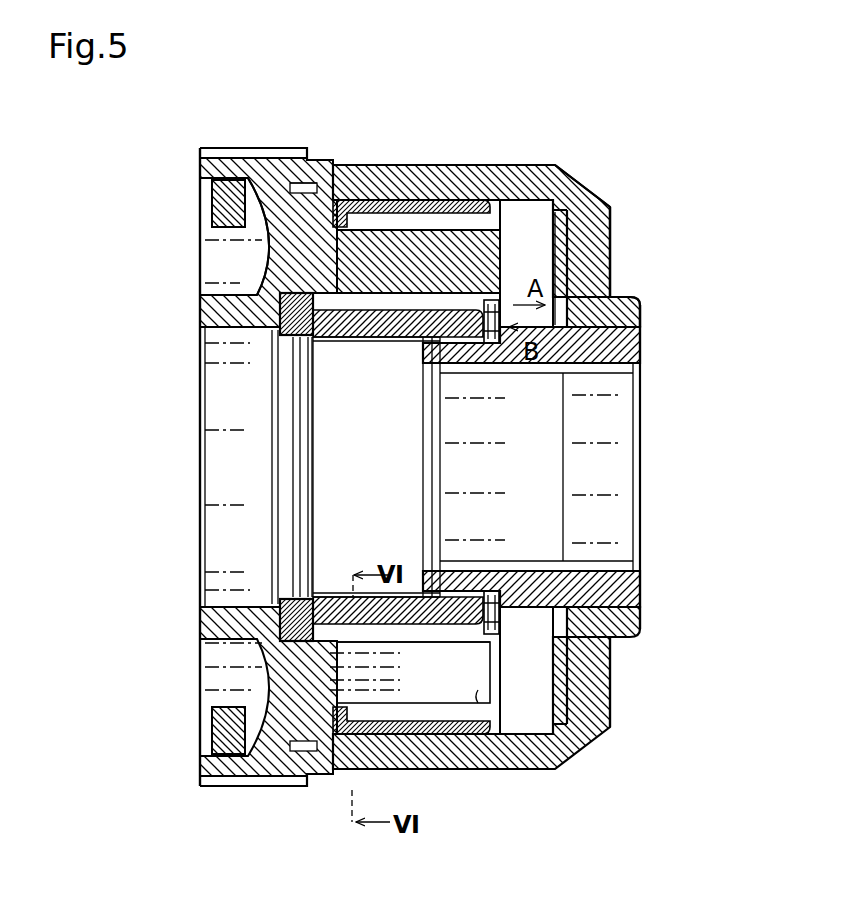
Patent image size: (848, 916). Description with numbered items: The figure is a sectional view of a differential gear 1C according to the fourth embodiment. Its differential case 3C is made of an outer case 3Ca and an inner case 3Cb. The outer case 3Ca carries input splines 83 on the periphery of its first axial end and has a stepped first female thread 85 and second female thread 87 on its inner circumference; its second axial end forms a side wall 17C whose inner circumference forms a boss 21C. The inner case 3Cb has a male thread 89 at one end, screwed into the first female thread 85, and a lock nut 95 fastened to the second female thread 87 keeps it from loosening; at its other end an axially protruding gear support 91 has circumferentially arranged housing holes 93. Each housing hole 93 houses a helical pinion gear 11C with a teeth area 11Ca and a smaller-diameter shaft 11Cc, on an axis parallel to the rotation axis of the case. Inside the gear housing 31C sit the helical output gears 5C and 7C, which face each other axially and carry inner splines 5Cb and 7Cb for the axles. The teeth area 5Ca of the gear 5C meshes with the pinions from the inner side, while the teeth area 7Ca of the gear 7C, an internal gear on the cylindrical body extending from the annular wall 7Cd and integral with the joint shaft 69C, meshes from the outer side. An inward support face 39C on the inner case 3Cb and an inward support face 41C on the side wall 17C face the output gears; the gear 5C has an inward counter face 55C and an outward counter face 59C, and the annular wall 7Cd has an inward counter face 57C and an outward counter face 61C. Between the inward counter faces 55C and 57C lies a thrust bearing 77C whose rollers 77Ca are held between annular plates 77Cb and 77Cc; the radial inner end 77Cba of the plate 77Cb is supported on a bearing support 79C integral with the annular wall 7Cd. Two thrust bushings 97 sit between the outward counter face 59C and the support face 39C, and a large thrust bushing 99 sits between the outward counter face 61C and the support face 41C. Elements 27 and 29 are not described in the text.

The differential gear 1C is at (573, 100).
The differential case 3C is at (484, 157).
The outer case 3Ca is at (427, 170).
The inner case 3Cb is at (362, 232).
The helical output gear 5C is at (338, 286).
The teeth area 5Ca is at (487, 737).
The inner spline 5Cb is at (367, 340).
The helical output gear 7C is at (403, 190).
The teeth area 7Ca is at (560, 747).
The inner spline 7Cb is at (510, 364).
The annular wall 7Cd is at (597, 207).
The helical pinion gear 11C is at (448, 708).
The teeth area 11Ca is at (433, 705).
The shaft 11Cc is at (527, 747).
The side wall 17C is at (605, 232).
The boss 21C is at (633, 297).
The hub bore 27 is at (235, 327).
The lip portion 29 is at (648, 343).
The gear housing 31C is at (417, 507).
The inward support face 39C is at (283, 345).
The inward support face 41C is at (612, 258).
The inward counter face 55C is at (520, 606).
The inward counter face 57C is at (483, 603).
The outward counter face 59C is at (298, 420).
The outward counter face 61C is at (603, 195).
The joint shaft 69C is at (598, 348).
The thrust bearing 77C is at (570, 730).
The roller 77Ca is at (510, 290).
The annular plate 77Cb is at (456, 232).
The radial inner end 77Cba is at (478, 338).
The annular plate 77Cc is at (575, 172).
The bearing support 79C is at (490, 348).
The input spline 83 is at (250, 158).
The first female thread 85 is at (290, 183).
The second female thread 87 is at (213, 192).
The male thread 89 is at (264, 172).
The gear support 91 is at (470, 165).
The housing hole 93 is at (337, 762).
The lock nut 95 is at (233, 148).
The thrust bushing 97 is at (268, 276).
The large thrust bushing 99 is at (583, 240).